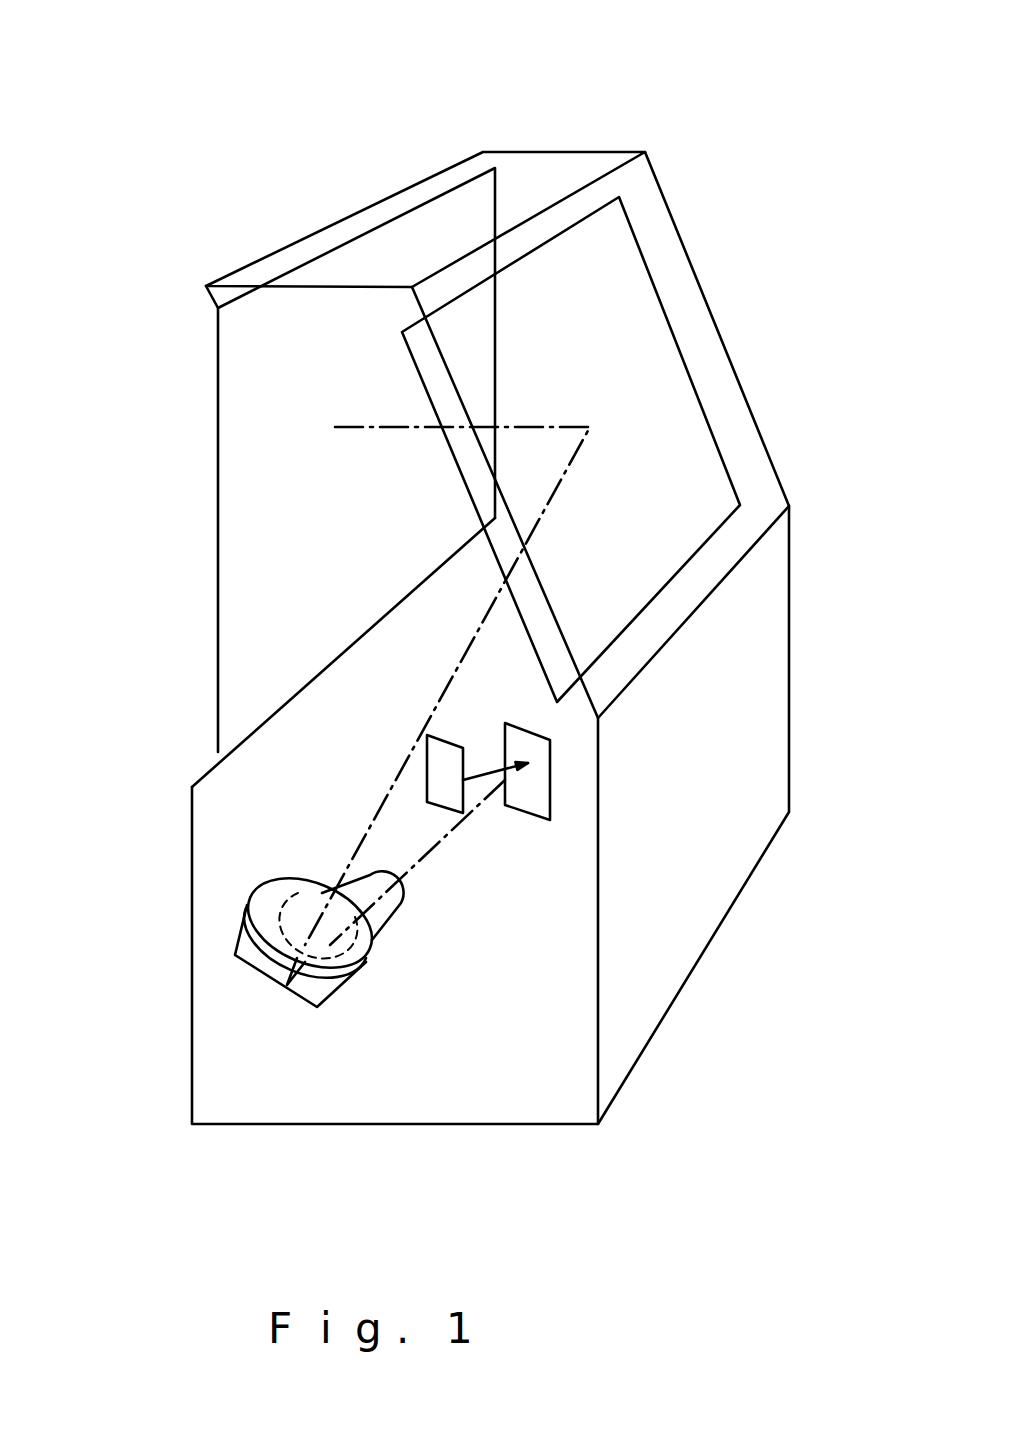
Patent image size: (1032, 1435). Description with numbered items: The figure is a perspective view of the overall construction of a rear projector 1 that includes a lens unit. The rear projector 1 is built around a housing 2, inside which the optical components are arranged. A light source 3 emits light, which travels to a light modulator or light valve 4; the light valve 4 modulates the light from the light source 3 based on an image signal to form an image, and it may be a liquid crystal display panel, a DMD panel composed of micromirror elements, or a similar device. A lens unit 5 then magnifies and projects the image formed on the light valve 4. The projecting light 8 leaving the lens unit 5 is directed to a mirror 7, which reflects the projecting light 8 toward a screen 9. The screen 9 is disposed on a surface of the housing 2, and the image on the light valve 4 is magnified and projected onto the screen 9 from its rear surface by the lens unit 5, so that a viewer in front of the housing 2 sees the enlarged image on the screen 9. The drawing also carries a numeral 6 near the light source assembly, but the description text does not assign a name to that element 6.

The rear projector 1 is at (590, 124).
The housing 2 is at (648, 938).
The light source 3 is at (445, 743).
The light modulator (light valve) 4 is at (537, 772).
The lens unit 5 is at (388, 927).
The reflector 6 is at (300, 1007).
The mirror 7 is at (686, 425).
The projecting light 8 is at (467, 653).
The screen 9 is at (217, 445).